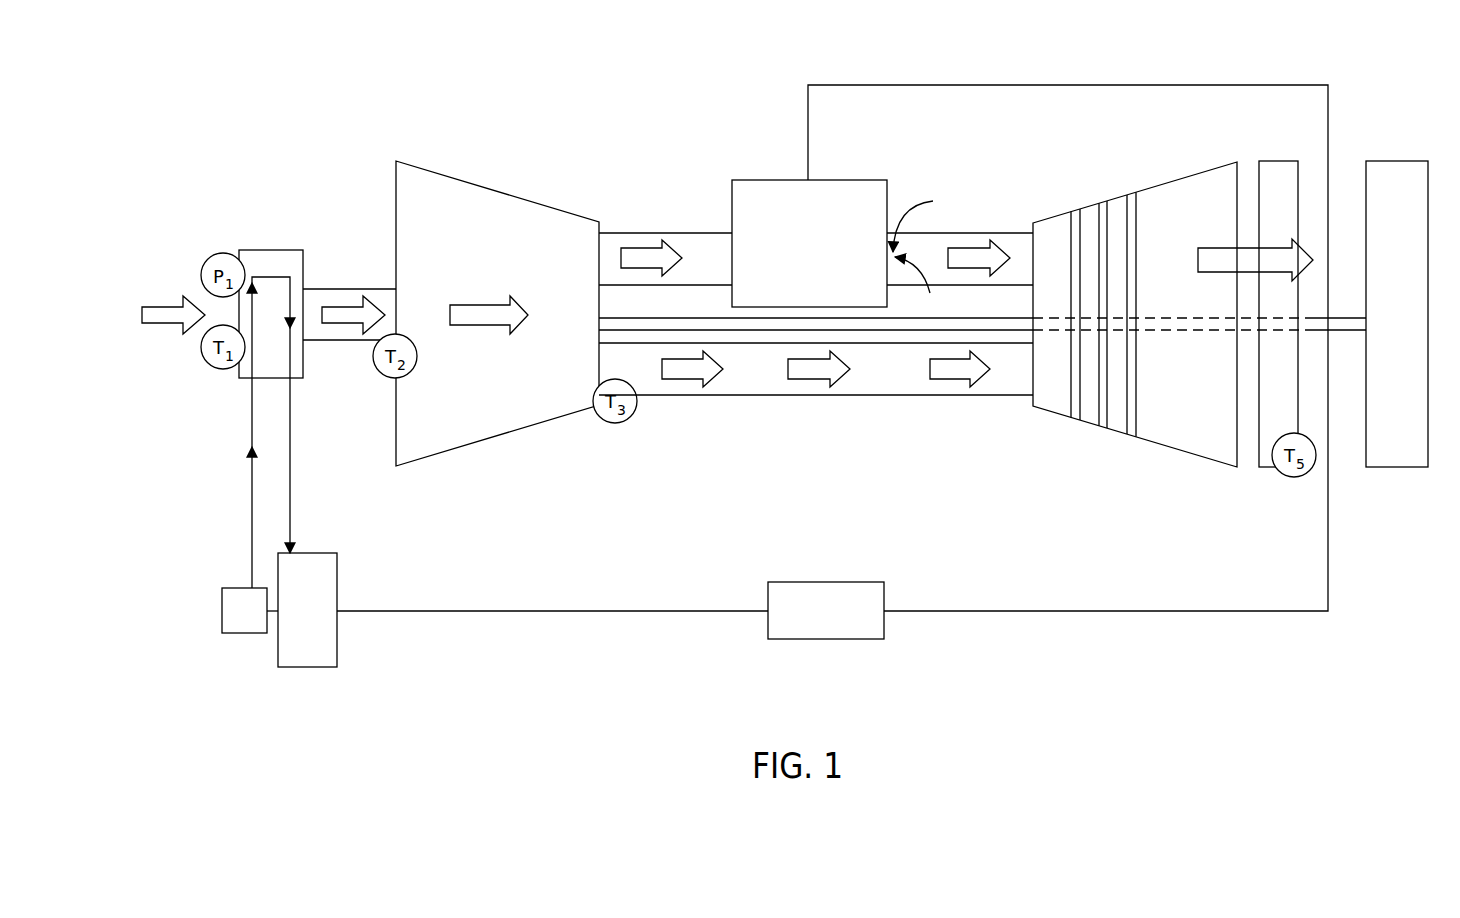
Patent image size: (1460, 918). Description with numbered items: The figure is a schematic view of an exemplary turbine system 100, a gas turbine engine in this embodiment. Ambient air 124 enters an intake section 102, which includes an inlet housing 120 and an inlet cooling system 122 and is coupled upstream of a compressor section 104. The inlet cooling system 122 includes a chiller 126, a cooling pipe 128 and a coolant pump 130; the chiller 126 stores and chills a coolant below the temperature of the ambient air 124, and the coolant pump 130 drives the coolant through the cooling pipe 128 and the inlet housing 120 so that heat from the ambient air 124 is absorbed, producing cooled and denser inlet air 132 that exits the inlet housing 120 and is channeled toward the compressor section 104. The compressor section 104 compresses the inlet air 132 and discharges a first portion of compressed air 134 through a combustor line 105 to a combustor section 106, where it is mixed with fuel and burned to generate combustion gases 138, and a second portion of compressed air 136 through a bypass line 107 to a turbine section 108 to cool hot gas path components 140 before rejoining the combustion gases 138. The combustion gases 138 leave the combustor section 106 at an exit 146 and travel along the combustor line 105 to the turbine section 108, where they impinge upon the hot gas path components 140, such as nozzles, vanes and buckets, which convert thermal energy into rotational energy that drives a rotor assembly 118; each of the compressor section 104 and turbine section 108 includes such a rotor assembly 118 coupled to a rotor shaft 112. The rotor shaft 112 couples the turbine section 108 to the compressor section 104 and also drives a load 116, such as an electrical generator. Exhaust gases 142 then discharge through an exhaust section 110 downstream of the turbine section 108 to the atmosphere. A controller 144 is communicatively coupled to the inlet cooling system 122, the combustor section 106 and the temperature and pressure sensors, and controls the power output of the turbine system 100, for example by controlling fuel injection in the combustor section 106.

The turbine system 100 is at (338, 85).
The intake section 102 is at (283, 250).
The compressor section 104 is at (420, 165).
The combustor line 105 is at (639, 222).
The combustor section 106 is at (783, 180).
The bypass line 107 is at (816, 406).
The turbine section 108 is at (1120, 302).
The exhaust section 110 is at (1280, 161).
The rotor shaft 112 is at (909, 331).
The load 116 is at (1387, 161).
The rotor assembly 118 is at (505, 178).
The inlet housing 120 is at (252, 378).
The inlet cooling system 122 is at (233, 634).
The ambient air 124 is at (165, 334).
The chiller 126 is at (320, 667).
The cooling pipe 128 is at (253, 533).
The coolant pump 130 is at (222, 620).
The inlet air 132 is at (355, 330).
The first portion of compressed air 134 is at (614, 218).
The second portion of compressed air 136 is at (678, 387).
The combustion gases 138 is at (970, 238).
The hot gas path components 140 is at (1095, 237).
The exhaust gases 142 is at (1248, 274).
The controller 144 is at (840, 582).
The exit of combustor section 146 is at (915, 198).